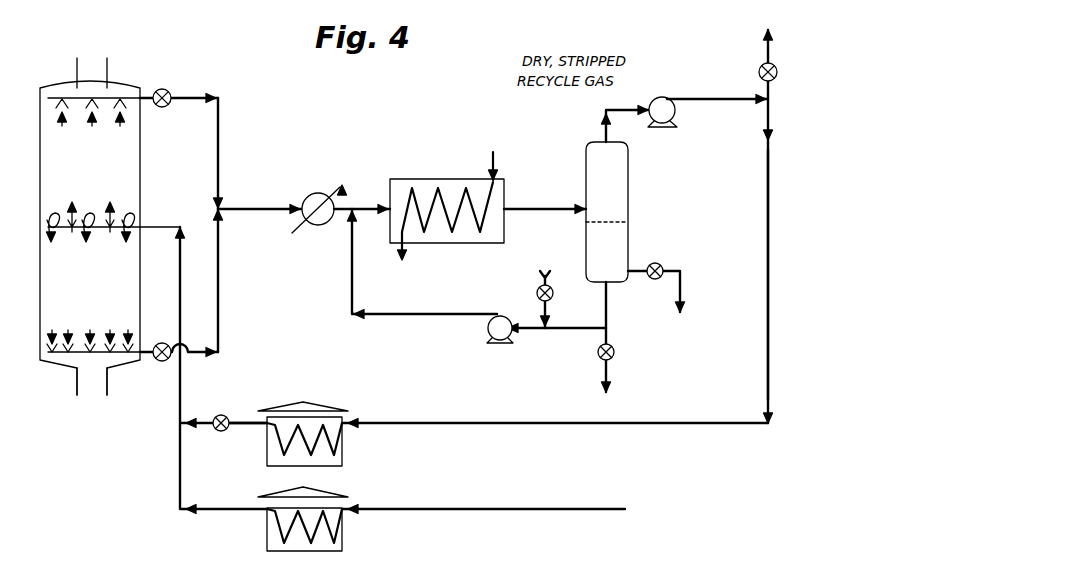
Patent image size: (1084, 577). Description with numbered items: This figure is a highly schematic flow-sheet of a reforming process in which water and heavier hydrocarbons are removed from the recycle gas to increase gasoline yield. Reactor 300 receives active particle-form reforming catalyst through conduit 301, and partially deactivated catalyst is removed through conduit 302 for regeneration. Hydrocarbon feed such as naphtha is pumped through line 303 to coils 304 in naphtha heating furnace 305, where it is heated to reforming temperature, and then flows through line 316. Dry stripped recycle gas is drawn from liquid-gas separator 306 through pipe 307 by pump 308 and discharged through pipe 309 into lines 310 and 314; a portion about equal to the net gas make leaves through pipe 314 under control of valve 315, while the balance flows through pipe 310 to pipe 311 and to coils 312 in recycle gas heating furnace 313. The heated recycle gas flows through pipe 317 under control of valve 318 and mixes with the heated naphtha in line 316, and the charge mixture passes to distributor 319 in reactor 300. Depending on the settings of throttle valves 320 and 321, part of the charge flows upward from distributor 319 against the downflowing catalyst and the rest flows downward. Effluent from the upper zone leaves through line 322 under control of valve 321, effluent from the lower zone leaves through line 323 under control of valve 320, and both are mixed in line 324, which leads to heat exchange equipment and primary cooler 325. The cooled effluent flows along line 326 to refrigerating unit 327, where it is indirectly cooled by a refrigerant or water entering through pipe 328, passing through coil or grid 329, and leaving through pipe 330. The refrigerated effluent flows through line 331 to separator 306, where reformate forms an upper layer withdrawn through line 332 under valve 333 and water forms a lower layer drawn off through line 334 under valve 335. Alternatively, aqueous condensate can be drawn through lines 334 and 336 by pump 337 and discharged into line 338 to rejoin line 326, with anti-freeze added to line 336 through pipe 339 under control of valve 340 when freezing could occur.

The reactor 300 is at (104, 165).
The conduit 301 is at (77, 62).
The conduit 302 is at (77, 380).
The line 303 is at (512, 510).
The coils 304 is at (275, 522).
The naphtha heating furnace 305 is at (345, 549).
The liquid-gas separator 306 is at (630, 176).
The pipe 307 is at (612, 108).
The pump 308 is at (676, 118).
The pipe 309 is at (740, 100).
The pipe 310 is at (768, 222).
The pipe 311 is at (410, 423).
The coils 312 is at (275, 440).
The recycle gas heating furnace 313 is at (266, 464).
The pipe 314 is at (772, 96).
The valve 315 is at (778, 74).
The line 316 is at (181, 382).
The pipe 317 is at (242, 420).
The valve 318 is at (224, 414).
The distributor 319 is at (114, 234).
The throttle valve 320 is at (162, 362).
The throttle valve 321 is at (170, 92).
The line 322 is at (218, 133).
The line 323 is at (218, 300).
The line 324 is at (240, 209).
The heat exchange equipment and primary cooler 325 is at (311, 190).
The line 326 is at (365, 205).
The refrigerating unit 327 is at (404, 179).
The pipe 328 is at (494, 164).
The coil or grid 329 is at (500, 223).
The pipe 330 is at (400, 246).
The line 331 is at (522, 209).
The line 332 is at (682, 286).
The valve 333 is at (663, 265).
The line 334 is at (607, 296).
The valve 335 is at (600, 362).
The line 336 is at (553, 330).
The pump 337 is at (490, 336).
The line 338 is at (352, 265).
The pipe 339 is at (546, 312).
The valve 340 is at (537, 293).